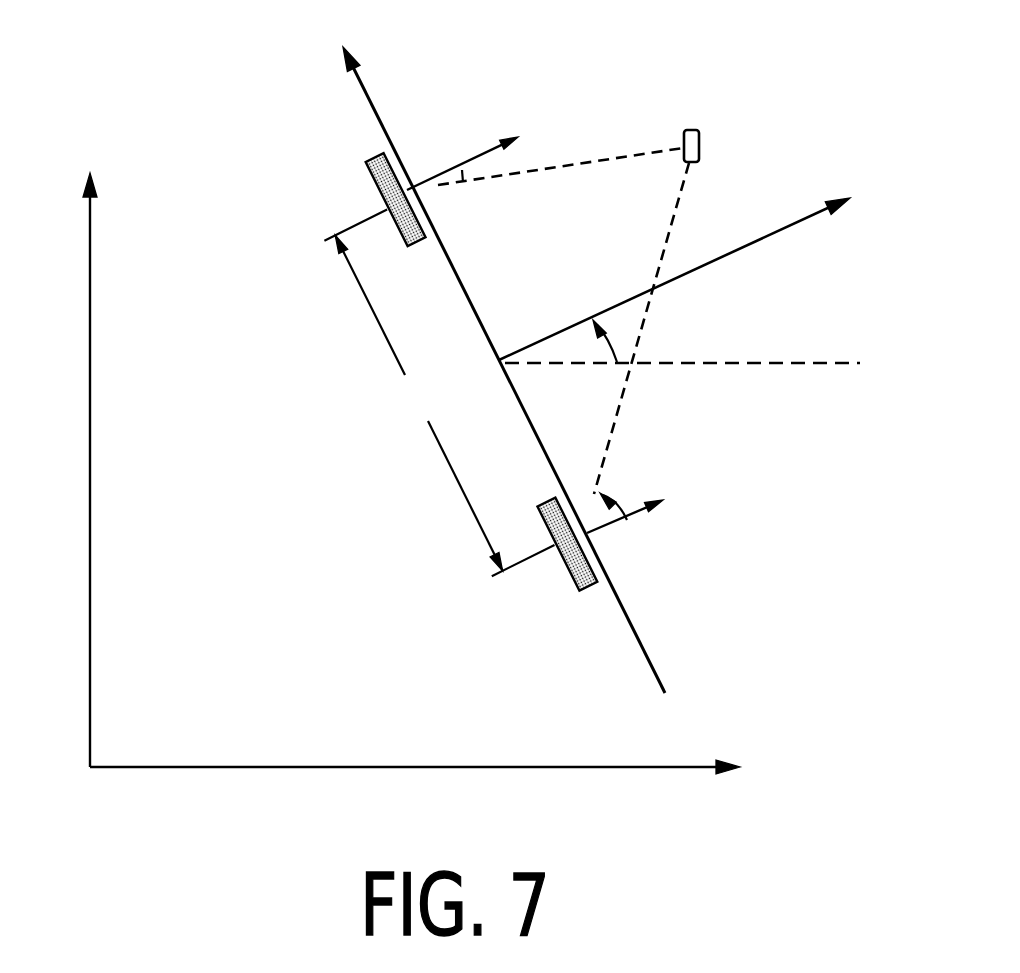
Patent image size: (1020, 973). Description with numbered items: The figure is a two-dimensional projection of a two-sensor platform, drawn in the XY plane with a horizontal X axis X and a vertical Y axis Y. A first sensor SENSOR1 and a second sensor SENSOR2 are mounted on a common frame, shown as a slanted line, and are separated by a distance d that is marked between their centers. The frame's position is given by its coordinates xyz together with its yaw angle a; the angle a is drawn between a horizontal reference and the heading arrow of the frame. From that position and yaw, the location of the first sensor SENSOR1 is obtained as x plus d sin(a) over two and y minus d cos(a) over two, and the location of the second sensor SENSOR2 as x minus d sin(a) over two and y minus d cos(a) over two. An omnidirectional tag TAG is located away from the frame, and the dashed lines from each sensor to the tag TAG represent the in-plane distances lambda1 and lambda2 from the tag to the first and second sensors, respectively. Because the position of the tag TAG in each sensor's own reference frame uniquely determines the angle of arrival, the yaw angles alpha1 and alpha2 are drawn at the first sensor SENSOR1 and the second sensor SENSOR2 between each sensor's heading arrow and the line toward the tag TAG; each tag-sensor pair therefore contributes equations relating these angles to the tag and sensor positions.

The tag TAG is at (700, 143).
The first sensor SENSOR1 is at (368, 162).
The second sensor SENSOR2 is at (570, 645).
The distance between the two sensors d is at (439, 392).
The distance from tag to first sensor lambda1 is at (560, 134).
The distance from tag to second sensor lambda2 is at (641, 328).
The yaw angle at first sensor alpha1 is at (482, 154).
The yaw angle at second sensor alpha2 is at (625, 492).
The yaw angle of the sensor frame a is at (614, 335).
The position of the two-sensor frame xyz is at (679, 310).
The X axis X is at (430, 772).
The Y axis Y is at (74, 468).